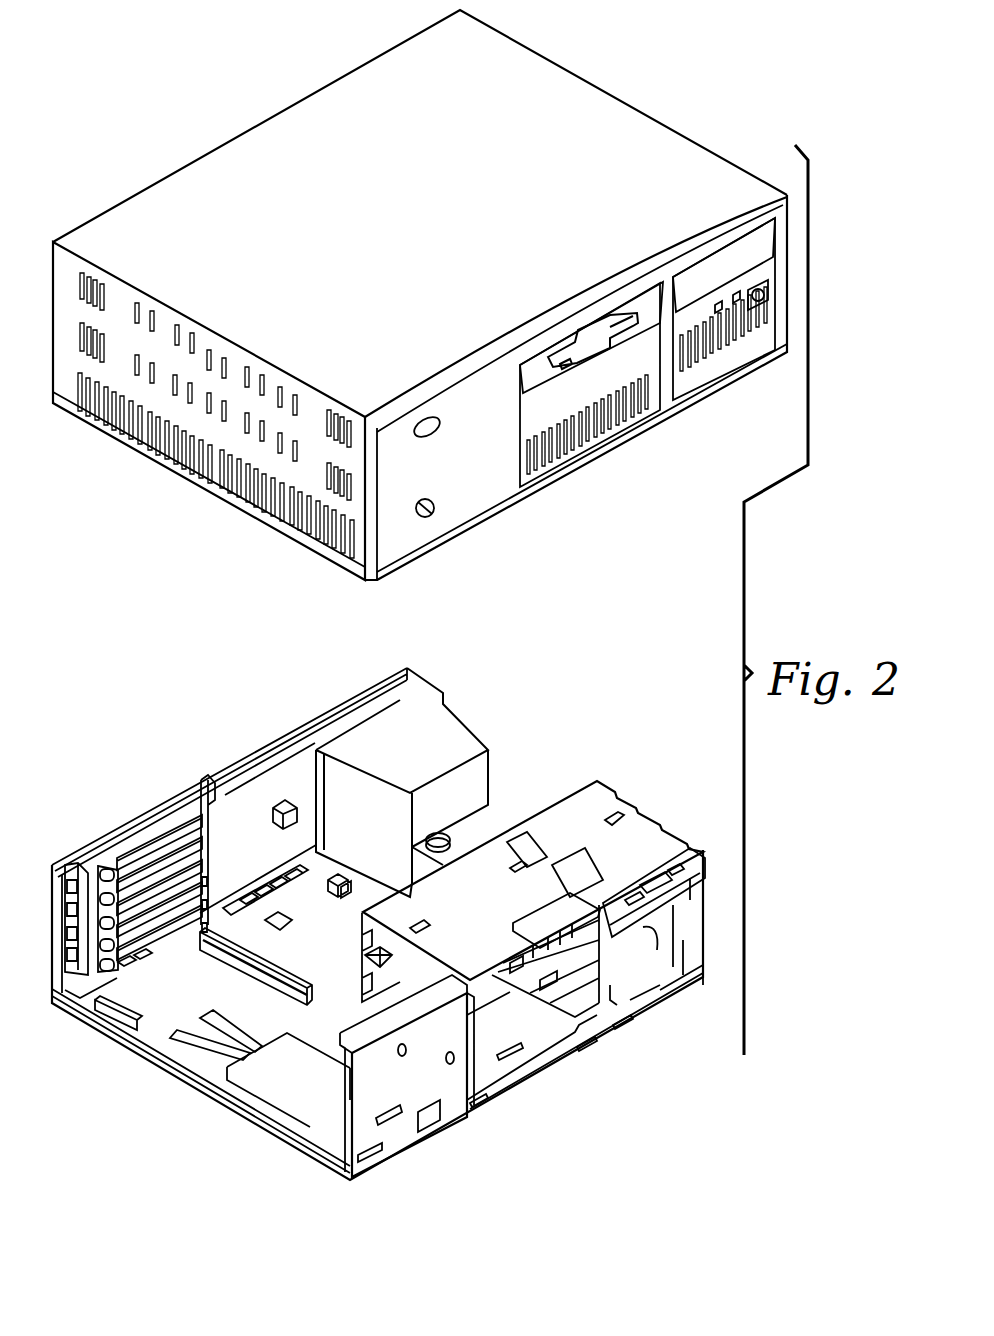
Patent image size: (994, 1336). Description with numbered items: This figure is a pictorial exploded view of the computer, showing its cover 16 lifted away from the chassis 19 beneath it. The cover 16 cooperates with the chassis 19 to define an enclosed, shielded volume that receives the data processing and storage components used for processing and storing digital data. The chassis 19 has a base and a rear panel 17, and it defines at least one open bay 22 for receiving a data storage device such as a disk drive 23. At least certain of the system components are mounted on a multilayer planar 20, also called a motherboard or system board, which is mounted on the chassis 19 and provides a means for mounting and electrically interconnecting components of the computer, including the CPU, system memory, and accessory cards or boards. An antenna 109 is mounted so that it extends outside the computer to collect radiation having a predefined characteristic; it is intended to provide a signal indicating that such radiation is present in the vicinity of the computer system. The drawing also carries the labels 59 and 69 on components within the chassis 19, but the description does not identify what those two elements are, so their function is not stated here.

The cover 16 is at (238, 131).
The rear panel 17 is at (121, 829).
The chassis 19 is at (166, 1073).
The multilayer planar 20 is at (105, 997).
The open bay 22 is at (590, 933).
The disk drive 23 is at (700, 861).
The connector 59 is at (292, 926).
The front panel 69 is at (336, 1097).
The antenna 109 is at (204, 800).